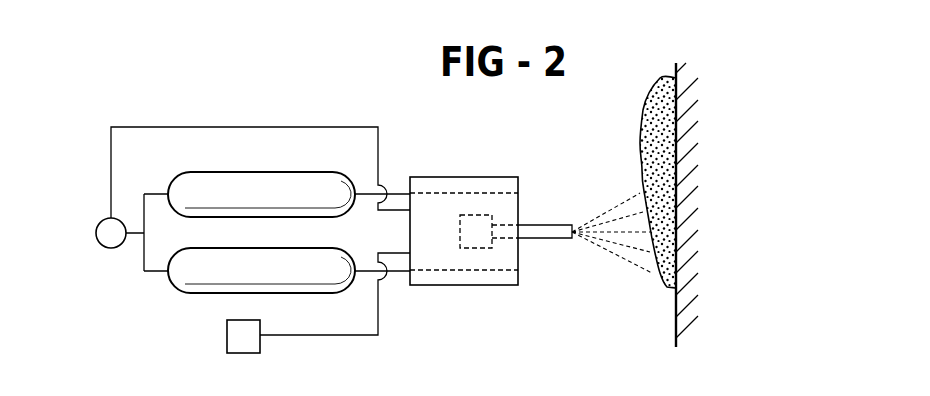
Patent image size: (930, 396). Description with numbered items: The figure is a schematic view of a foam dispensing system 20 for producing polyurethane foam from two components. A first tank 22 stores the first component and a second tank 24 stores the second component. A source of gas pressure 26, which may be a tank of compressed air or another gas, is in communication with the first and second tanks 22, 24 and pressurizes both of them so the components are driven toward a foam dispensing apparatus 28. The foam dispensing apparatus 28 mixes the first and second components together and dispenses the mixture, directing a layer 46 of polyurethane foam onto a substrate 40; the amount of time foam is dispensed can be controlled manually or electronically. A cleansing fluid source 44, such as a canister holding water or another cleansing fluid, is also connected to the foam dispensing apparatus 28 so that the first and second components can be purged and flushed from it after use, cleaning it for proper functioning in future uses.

The foam dispensing system 20 is at (80, 286).
The first tank 22 is at (273, 172).
The second tank 24 is at (182, 272).
The source of gas pressure 26 is at (96, 228).
The foam dispensing apparatus 28 is at (482, 177).
The substrate 40 is at (676, 65).
The cleansing fluid source 44 is at (243, 336).
The layer 46 is at (654, 91).